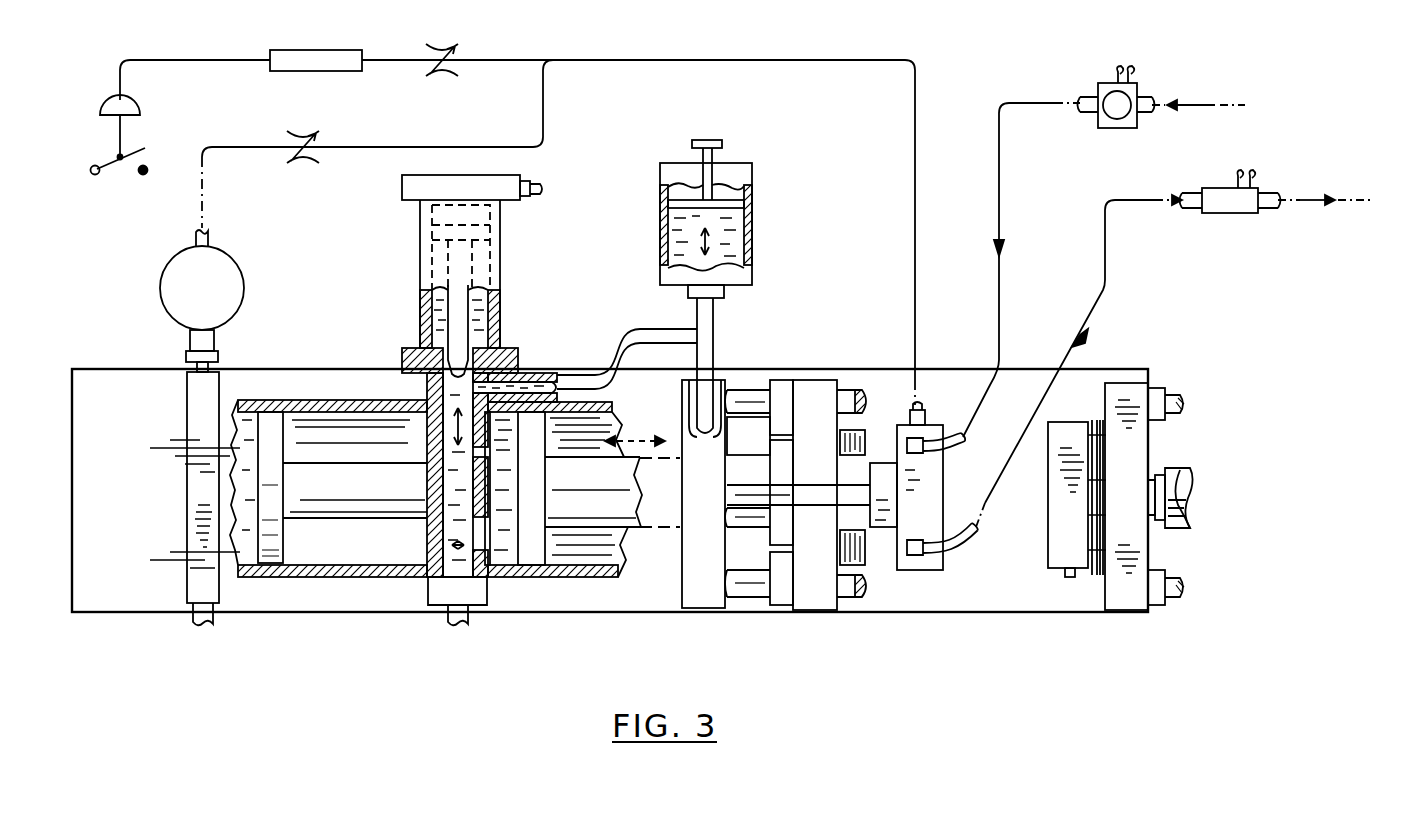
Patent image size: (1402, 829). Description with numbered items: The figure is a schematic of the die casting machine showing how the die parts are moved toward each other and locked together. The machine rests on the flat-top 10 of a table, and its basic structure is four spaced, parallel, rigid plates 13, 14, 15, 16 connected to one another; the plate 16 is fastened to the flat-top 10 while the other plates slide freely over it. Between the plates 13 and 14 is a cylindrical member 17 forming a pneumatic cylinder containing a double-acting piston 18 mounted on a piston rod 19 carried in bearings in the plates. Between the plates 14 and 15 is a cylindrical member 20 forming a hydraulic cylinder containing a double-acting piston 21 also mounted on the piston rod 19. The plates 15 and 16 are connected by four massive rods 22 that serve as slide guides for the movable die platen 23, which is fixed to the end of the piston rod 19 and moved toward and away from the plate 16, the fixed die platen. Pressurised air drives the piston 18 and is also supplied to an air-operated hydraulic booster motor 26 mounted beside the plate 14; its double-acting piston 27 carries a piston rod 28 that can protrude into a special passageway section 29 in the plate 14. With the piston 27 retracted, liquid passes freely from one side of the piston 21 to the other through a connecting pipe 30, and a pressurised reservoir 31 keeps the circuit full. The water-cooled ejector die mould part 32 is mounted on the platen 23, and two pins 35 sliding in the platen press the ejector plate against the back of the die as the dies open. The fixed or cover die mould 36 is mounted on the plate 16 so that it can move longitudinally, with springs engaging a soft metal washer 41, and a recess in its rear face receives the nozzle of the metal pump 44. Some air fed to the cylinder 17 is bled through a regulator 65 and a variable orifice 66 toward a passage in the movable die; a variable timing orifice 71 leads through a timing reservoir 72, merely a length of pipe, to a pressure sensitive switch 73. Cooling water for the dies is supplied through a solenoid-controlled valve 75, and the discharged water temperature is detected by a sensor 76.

The flat-top of table 10 is at (152, 502).
The plate 13 is at (220, 500).
The plate 14 is at (460, 600).
The plate 15 is at (716, 510).
The plate 16 is at (1140, 520).
The cylindrical member 17 is at (327, 580).
The double-acting piston 18 is at (280, 535).
The piston rod 19 is at (505, 515).
The cylindrical member 20 is at (582, 578).
The double-acting piston 21 is at (533, 535).
The rods 22 is at (850, 600).
The movable die platen 23 is at (830, 485).
The air-operated hydraulic booster motor 26 is at (500, 235).
The double-acting piston 27 is at (472, 247).
The piston rod 28 is at (462, 306).
The special passageway section 29 is at (445, 405).
The connecting pipe 30 is at (712, 357).
The pressurised reservoir 31 is at (753, 222).
The ejector die mould part 32 is at (930, 568).
The pins 35 is at (855, 490).
The fixed or cover die mould 36 is at (1050, 557).
The soft metal washer 41 is at (1097, 572).
The metal pump 44 is at (1188, 466).
The regulator 65 is at (232, 272).
The variable orifice 66 is at (305, 158).
The variable timing orifice 71 is at (442, 70).
The timing reservoir 72 is at (311, 50).
The pressure sensitive switch 73 is at (110, 107).
The solenoid-controlled valve 75 is at (1113, 118).
The sensor 76 is at (1228, 213).